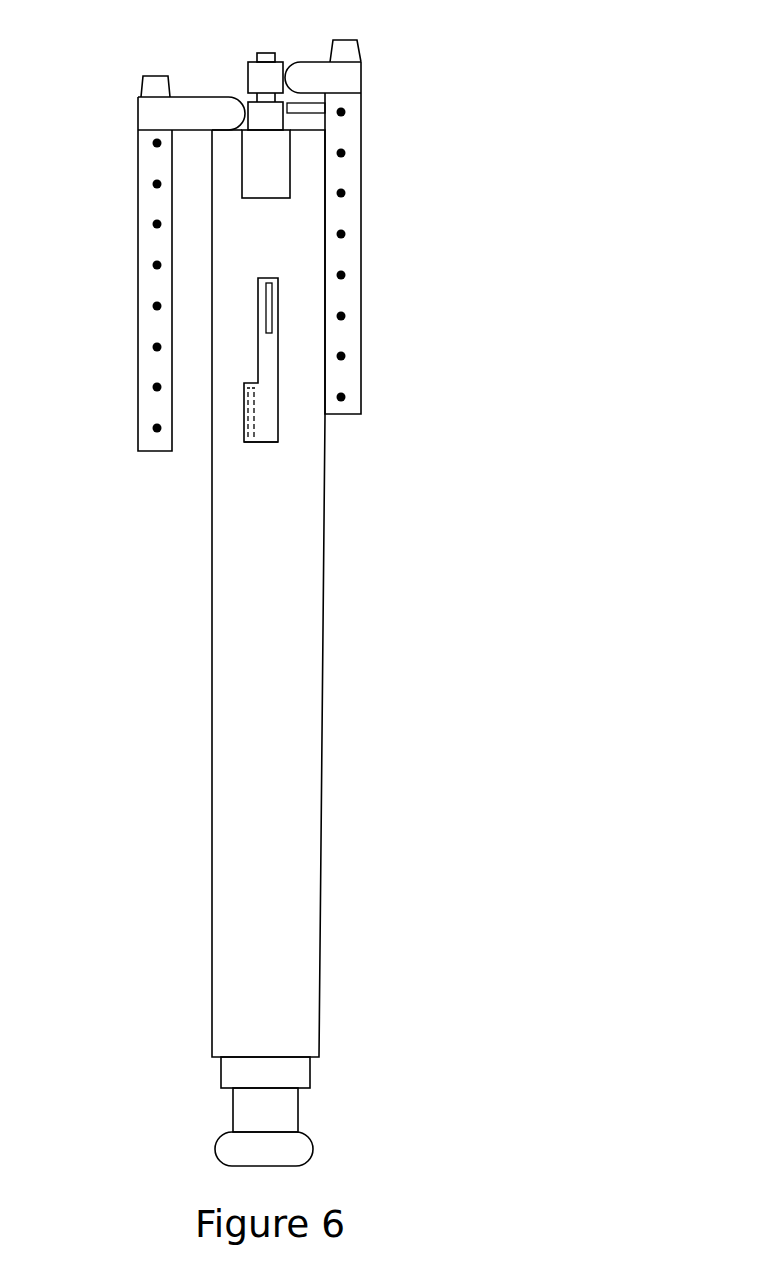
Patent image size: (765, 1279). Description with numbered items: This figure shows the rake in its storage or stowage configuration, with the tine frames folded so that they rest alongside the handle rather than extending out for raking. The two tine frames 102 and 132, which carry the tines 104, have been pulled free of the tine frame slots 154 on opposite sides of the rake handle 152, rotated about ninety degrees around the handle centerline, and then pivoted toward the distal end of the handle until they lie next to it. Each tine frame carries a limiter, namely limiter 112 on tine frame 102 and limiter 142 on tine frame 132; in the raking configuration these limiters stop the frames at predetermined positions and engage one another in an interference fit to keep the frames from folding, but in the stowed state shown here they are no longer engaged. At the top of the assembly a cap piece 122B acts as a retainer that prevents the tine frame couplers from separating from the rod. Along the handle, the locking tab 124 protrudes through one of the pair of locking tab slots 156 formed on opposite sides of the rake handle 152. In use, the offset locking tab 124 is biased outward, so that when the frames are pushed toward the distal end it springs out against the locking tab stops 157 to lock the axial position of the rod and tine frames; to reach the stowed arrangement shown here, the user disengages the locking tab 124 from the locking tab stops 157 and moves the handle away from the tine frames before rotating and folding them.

The tine frame 102 is at (138, 292).
The tines 104 is at (154, 435).
The limiter 112 is at (140, 95).
The cap piece 122B is at (263, 53).
The locking tab 124 is at (278, 308).
The tine frame 132 is at (362, 382).
The limiter 142 is at (360, 42).
The rake handle 152 is at (321, 768).
The tine frame slots 154 is at (290, 178).
The locking tab slots 156 is at (278, 440).
The locking tab stops 157 is at (252, 445).